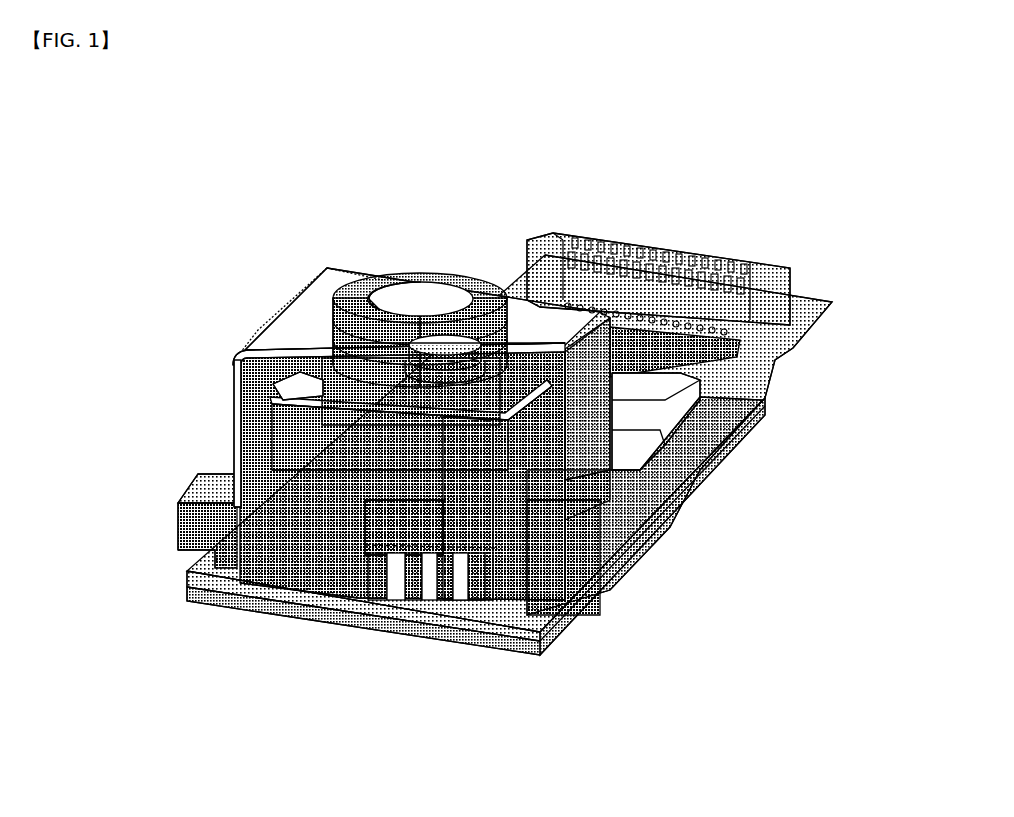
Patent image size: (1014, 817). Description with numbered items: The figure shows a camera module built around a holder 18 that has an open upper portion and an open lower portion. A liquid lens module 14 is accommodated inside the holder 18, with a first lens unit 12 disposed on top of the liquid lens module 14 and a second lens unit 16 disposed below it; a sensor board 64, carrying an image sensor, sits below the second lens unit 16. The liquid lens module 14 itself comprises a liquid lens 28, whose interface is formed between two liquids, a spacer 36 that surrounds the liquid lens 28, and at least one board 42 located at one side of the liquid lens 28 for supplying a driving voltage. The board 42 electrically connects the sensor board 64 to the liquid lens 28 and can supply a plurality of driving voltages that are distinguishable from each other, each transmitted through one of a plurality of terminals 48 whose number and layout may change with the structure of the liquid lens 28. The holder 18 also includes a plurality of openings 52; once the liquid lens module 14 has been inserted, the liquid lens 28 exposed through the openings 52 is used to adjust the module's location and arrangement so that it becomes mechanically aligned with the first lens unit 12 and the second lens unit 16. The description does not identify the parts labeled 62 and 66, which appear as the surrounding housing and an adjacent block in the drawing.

The first lens unit 12 is at (440, 318).
The liquid lens module 14 is at (155, 326).
The second lens unit 16 is at (413, 514).
The holder 18 is at (360, 298).
The liquid lens 28 is at (262, 356).
The spacer 36 is at (326, 418).
The board 42 is at (280, 391).
The terminals 48 is at (416, 612).
The openings 52 is at (350, 348).
The housing 62 is at (303, 300).
The sensor board 64 is at (520, 638).
The side block 66 is at (255, 557).